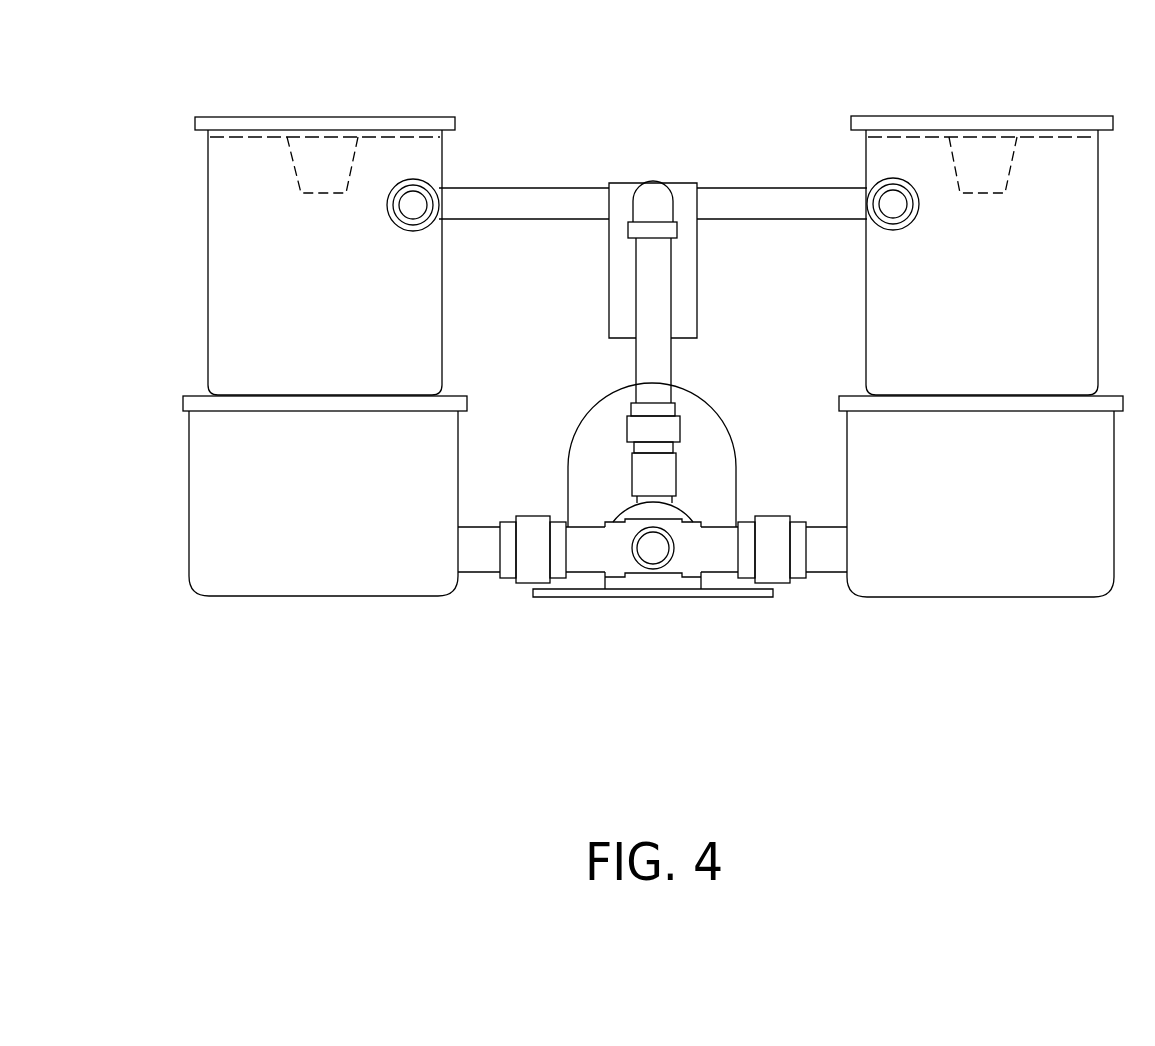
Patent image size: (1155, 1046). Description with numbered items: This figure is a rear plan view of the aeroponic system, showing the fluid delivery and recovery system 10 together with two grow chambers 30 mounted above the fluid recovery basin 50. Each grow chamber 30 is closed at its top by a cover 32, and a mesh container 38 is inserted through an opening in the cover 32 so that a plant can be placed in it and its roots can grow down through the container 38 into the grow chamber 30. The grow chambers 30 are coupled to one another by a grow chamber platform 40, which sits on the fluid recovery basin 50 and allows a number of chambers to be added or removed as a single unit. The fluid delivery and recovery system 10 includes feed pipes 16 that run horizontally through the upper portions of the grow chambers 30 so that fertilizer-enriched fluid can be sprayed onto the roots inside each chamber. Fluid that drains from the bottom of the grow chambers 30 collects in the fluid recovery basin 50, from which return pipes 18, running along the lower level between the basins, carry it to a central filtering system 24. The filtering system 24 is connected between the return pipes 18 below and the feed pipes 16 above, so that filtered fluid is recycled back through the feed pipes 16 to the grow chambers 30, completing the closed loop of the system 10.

The fluid delivery and recovery system 10 is at (648, 612).
The feed pipes 16 is at (525, 200).
The return pipes 18 is at (478, 537).
The filtering system 24 is at (685, 197).
The grow chambers 30 is at (222, 264).
The covers 32 is at (415, 123).
The containers 38 is at (325, 153).
The grow chamber platform 40 is at (188, 403).
The fluid recovery basin 50 is at (203, 502).